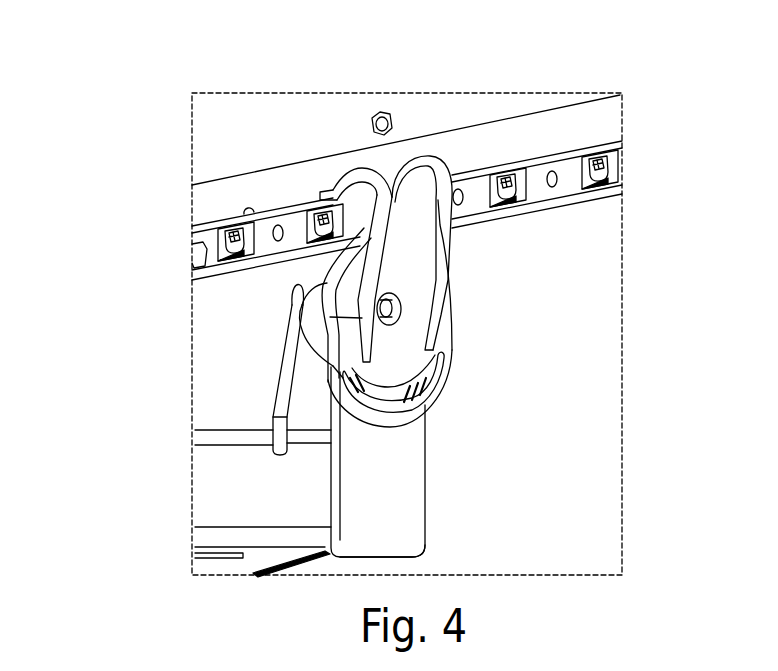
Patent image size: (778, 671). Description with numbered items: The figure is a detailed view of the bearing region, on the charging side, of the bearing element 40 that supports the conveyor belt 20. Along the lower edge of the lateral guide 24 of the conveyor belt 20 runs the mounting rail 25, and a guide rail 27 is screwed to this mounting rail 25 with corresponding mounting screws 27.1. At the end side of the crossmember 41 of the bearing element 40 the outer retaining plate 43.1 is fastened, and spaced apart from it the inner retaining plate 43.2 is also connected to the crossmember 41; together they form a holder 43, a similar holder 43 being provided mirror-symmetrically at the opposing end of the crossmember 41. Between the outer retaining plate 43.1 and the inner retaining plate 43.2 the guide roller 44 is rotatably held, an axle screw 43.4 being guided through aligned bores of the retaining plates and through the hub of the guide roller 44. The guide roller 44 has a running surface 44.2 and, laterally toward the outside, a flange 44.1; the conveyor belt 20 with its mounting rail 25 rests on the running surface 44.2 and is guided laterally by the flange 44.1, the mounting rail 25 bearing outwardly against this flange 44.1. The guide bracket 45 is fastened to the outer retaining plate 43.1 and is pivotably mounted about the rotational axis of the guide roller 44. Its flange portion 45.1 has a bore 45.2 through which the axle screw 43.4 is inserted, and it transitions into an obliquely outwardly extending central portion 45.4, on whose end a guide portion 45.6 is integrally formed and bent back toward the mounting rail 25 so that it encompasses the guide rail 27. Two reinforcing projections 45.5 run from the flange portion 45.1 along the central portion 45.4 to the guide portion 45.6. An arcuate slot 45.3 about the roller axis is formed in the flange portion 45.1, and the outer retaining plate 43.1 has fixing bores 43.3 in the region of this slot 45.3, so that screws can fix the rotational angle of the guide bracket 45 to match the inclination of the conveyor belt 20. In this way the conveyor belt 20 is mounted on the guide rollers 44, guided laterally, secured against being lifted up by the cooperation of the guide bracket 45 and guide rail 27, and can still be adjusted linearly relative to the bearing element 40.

The conveyor belt 20 is at (155, 143).
The lateral guide 24 is at (516, 105).
The mounting rail 25 is at (600, 112).
The guide rail 27 is at (614, 144).
The mounting screws 27.1 is at (618, 170).
The bearing element 40 is at (518, 485).
The crossmember 41 is at (227, 490).
The holder 43 is at (442, 475).
The outer retaining plate 43.1 is at (408, 535).
The inner retaining plate 43.2 is at (277, 392).
The fixing bores 43.3 is at (402, 417).
The axle screw 43.4 is at (437, 324).
The guide roller 44 is at (307, 335).
The flange 44.1 is at (315, 310).
The running surface 44.2 is at (317, 282).
The guide bracket 45 is at (401, 308).
The flange portion 45.1 is at (437, 377).
The bore 45.2 is at (440, 355).
The slot 45.3 is at (438, 397).
The central portion 45.4 is at (440, 268).
The reinforcing projections 45.5 is at (434, 245).
The guide portion 45.6 is at (320, 193).